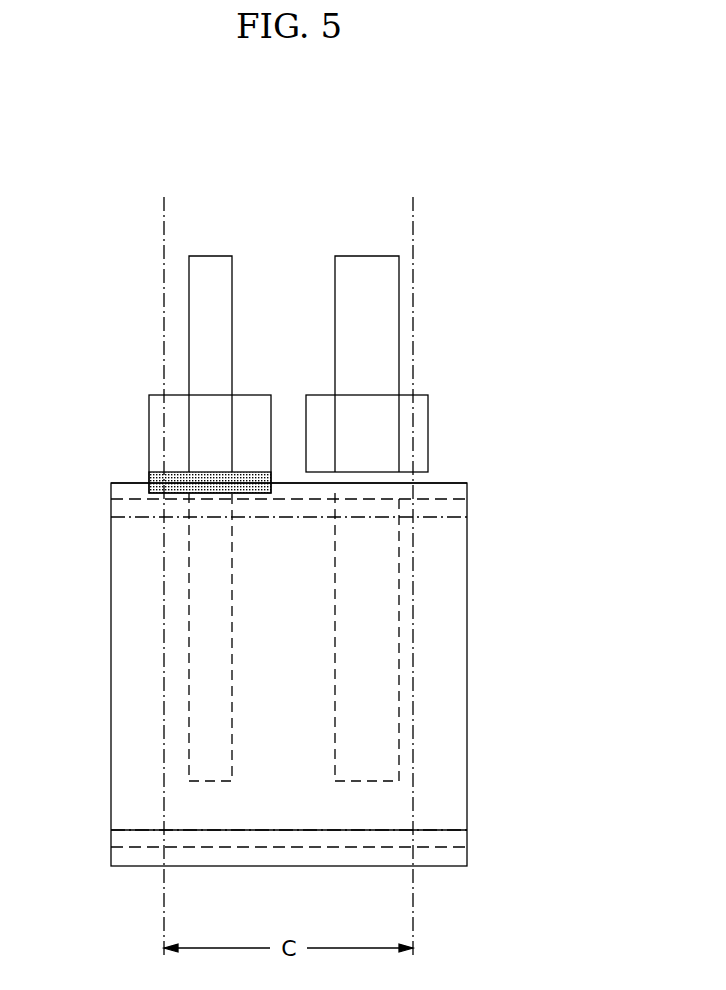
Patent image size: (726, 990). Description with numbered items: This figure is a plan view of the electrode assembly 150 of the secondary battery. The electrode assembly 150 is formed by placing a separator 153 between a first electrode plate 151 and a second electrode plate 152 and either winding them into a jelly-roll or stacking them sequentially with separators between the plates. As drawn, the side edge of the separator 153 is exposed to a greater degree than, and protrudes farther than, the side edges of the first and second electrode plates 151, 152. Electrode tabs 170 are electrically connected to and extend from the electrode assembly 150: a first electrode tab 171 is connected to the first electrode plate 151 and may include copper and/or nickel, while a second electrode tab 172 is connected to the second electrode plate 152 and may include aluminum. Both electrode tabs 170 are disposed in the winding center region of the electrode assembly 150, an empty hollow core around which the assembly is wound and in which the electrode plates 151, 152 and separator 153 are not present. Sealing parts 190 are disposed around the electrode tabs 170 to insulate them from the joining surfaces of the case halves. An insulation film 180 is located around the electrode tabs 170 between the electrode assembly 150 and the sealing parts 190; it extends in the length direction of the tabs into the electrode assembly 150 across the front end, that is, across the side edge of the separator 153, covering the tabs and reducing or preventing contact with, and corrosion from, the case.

The electrode assembly 150 is at (268, 683).
The first electrode plate 151 is at (460, 500).
The second electrode plate 152 is at (460, 517).
The separator 153 is at (459, 482).
The electrode tab 170 is at (294, 454).
The first electrode tab 171 is at (212, 263).
The second electrode tab 172 is at (367, 482).
The insulation film 180 is at (149, 478).
The sealing part 190 is at (149, 428).